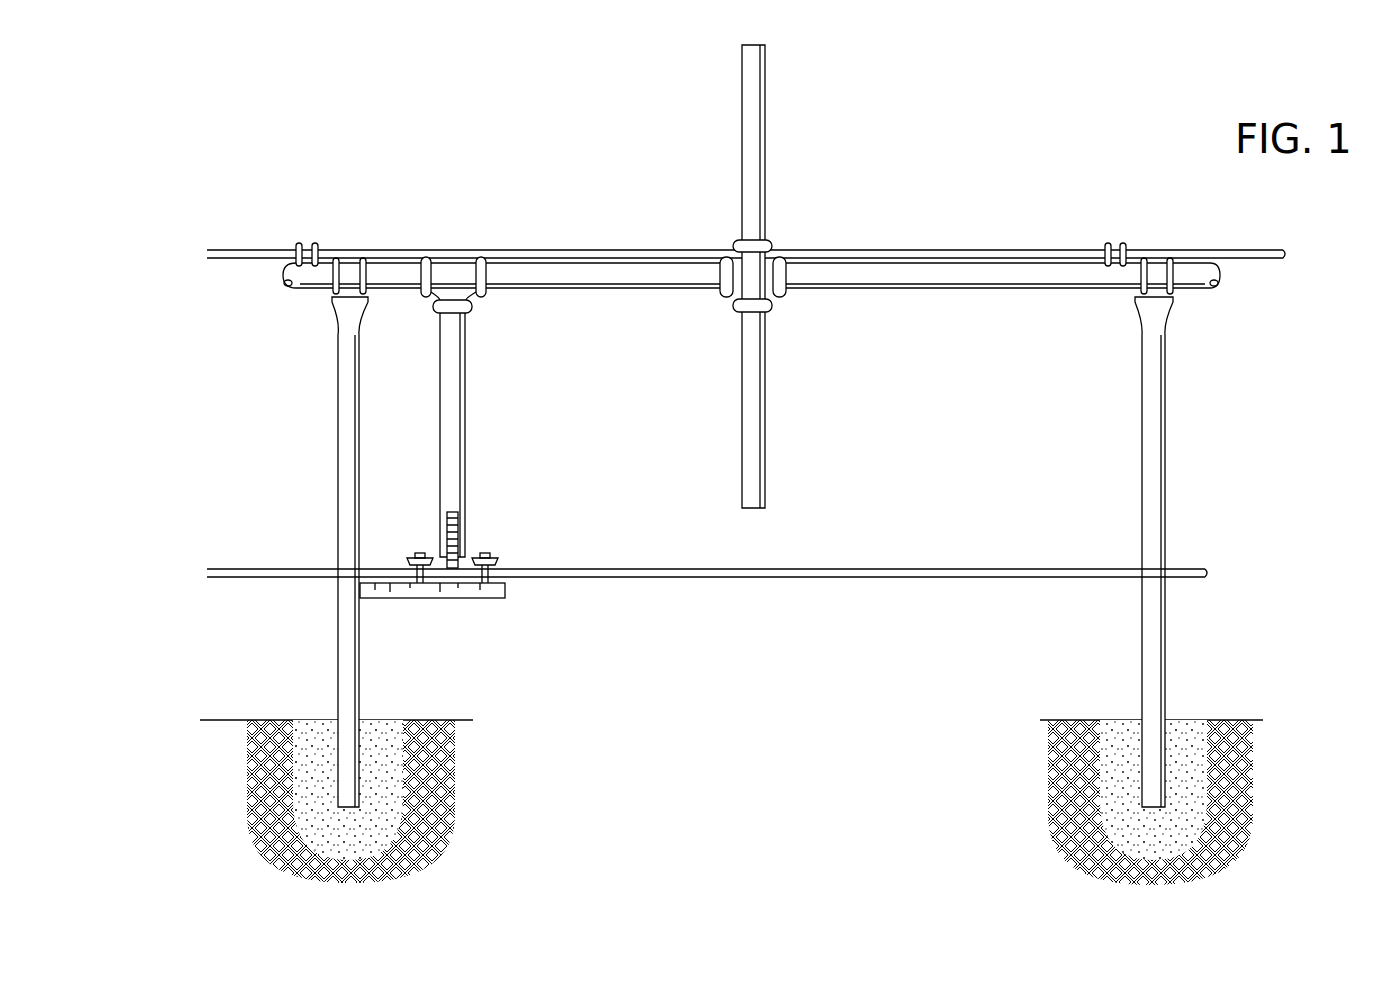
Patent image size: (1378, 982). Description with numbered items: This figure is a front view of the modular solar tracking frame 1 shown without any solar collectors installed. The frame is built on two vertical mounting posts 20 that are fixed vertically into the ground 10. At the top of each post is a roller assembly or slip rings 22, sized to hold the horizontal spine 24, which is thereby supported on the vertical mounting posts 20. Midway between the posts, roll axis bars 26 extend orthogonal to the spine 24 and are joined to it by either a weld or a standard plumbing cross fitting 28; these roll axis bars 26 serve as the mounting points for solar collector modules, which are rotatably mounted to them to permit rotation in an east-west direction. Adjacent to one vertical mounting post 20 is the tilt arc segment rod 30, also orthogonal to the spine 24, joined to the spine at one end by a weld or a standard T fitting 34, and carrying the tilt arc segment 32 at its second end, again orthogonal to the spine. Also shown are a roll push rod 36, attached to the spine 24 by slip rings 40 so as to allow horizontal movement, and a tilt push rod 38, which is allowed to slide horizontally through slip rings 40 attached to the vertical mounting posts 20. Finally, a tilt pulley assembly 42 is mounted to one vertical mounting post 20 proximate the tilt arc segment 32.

The modular solar tracking frame 1 is at (556, 112).
The ground 10 is at (385, 720).
The vertical mounting posts 20 is at (337, 620).
The roller assembly or slip rings 22 is at (329, 276).
The horizontal spine 24 is at (1185, 293).
The roll axis bars 26 is at (765, 120).
The cross fitting 28 is at (760, 305).
The tilt arc segment rod 30 is at (466, 355).
The tilt arc segment 32 is at (455, 512).
The T fitting 34 is at (447, 284).
The roll push rod 36 is at (1057, 250).
The tilt push rod 38 is at (1182, 568).
The slip rings 40 is at (314, 243).
The tilt pulley assembly 42 is at (505, 590).